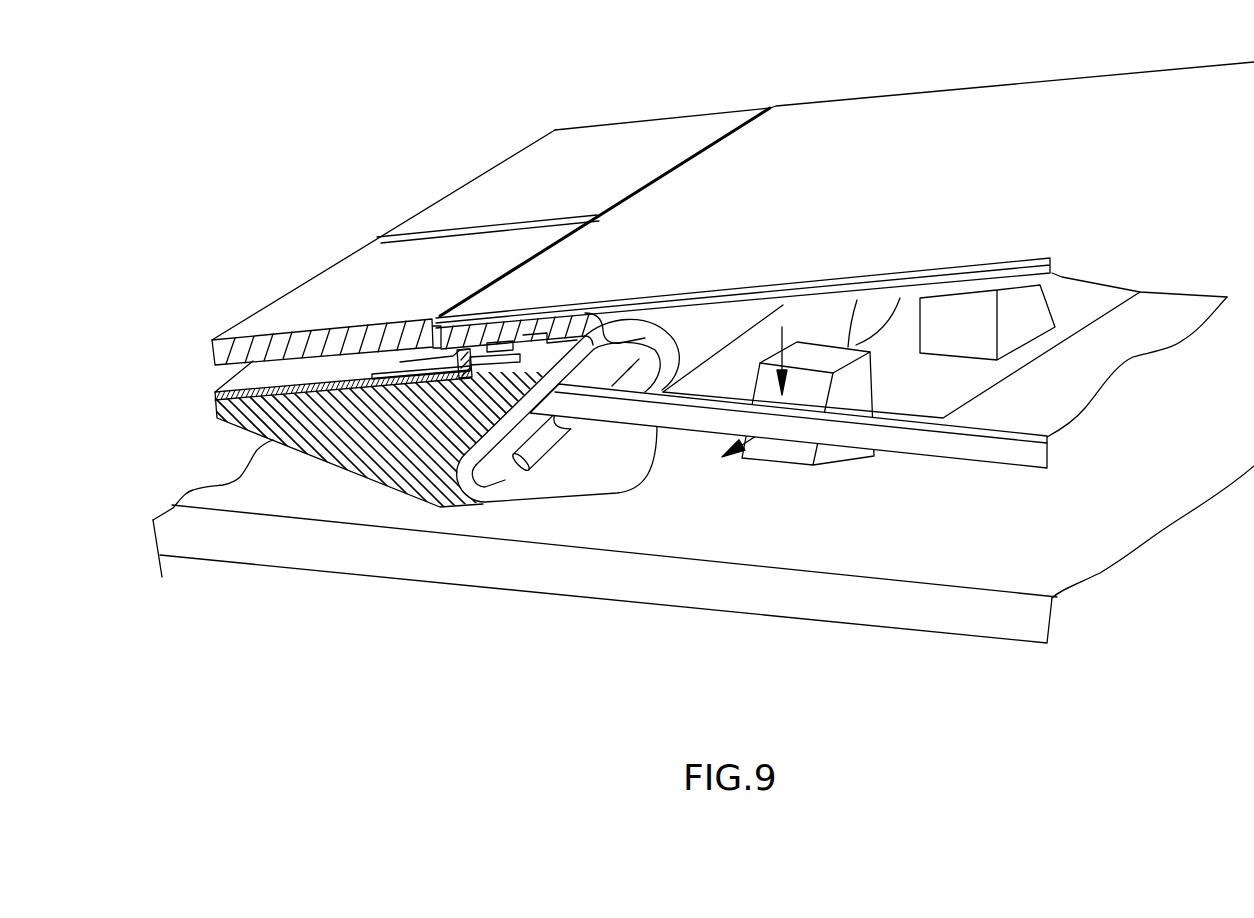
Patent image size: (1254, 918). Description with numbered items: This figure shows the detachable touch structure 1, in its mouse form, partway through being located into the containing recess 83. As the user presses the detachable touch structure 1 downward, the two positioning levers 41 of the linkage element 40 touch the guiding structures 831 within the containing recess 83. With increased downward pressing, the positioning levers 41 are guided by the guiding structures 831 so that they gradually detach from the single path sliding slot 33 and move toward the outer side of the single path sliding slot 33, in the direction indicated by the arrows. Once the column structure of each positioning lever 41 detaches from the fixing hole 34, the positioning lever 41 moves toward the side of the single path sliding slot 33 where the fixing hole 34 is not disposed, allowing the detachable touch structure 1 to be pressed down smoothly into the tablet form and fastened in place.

The detachable touch structure 1 is at (318, 160).
The single path sliding slot 33 is at (550, 443).
The fixing hole 34 is at (512, 468).
The linkage element 40 is at (1133, 352).
The positioning lever 41 is at (873, 432).
The containing recess 83 is at (963, 567).
The guiding structure 831 is at (795, 465).